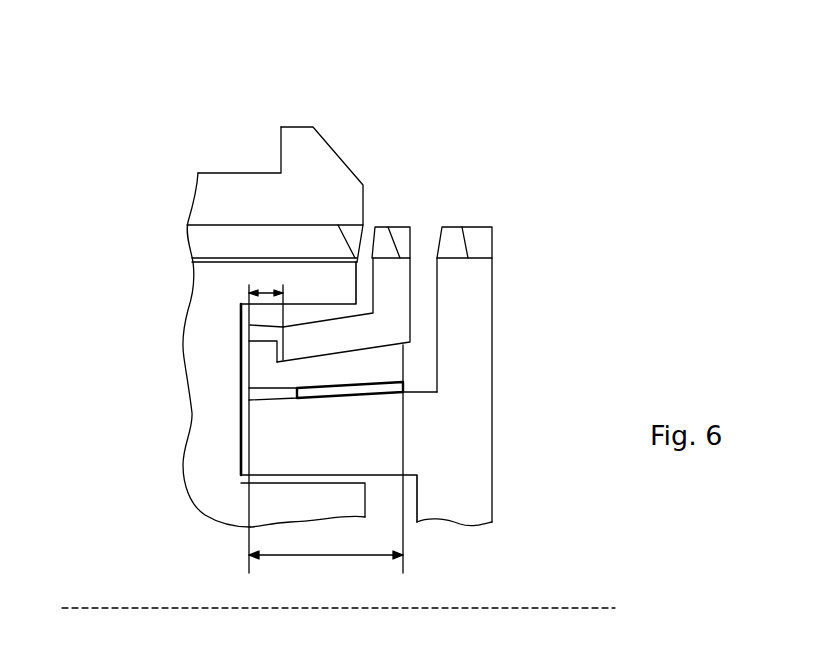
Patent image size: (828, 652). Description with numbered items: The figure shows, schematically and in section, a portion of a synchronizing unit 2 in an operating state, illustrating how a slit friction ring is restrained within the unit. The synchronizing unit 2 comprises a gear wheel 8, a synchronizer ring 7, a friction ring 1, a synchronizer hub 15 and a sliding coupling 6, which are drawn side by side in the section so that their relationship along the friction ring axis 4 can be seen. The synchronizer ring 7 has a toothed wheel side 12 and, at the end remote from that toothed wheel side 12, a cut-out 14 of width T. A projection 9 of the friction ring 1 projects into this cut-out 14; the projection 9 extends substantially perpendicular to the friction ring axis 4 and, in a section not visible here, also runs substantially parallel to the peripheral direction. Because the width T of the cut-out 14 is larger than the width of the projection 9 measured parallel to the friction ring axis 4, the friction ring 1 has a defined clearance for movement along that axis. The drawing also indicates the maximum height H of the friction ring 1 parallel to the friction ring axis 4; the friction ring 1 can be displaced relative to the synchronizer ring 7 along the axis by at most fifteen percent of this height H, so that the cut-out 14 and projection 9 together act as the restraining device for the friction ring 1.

The friction ring 1 is at (403, 366).
The synchronizing unit 2 is at (328, 80).
The friction ring axis 4 is at (522, 608).
The sliding coupling 6 is at (238, 174).
The synchronizer ring 7 is at (392, 226).
The gear wheel 8 is at (492, 470).
The projection 9 is at (249, 341).
The toothed wheel side 12 is at (410, 285).
The cut-out 14 is at (250, 325).
The synchronizer hub 15 is at (187, 392).
The width of the cut-out T is at (270, 293).
The maximum height of the friction ring H is at (327, 558).